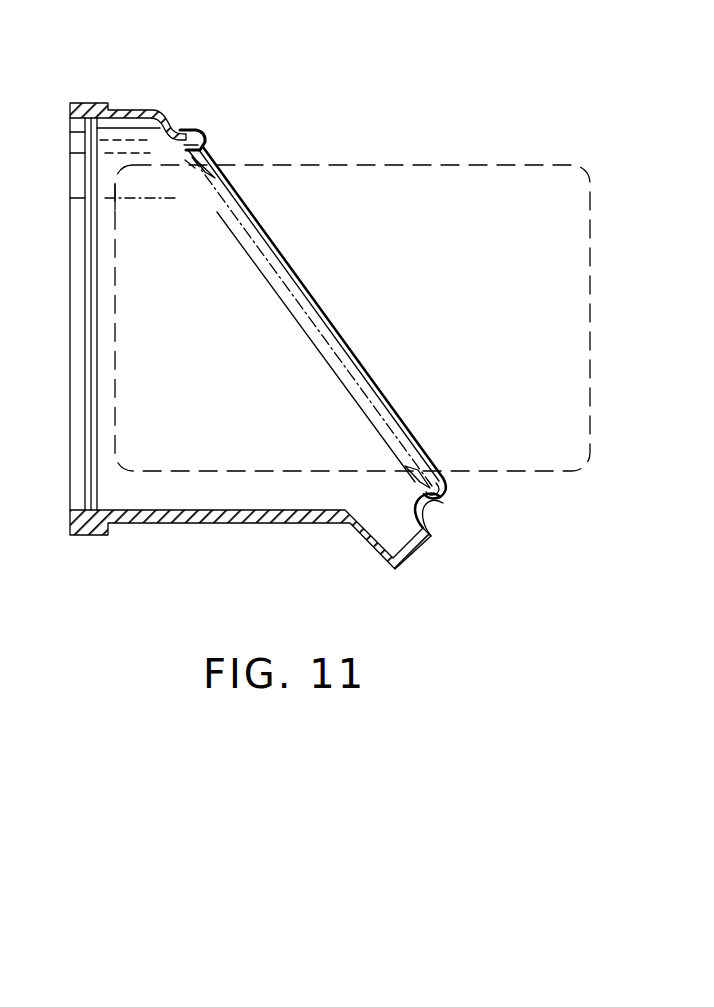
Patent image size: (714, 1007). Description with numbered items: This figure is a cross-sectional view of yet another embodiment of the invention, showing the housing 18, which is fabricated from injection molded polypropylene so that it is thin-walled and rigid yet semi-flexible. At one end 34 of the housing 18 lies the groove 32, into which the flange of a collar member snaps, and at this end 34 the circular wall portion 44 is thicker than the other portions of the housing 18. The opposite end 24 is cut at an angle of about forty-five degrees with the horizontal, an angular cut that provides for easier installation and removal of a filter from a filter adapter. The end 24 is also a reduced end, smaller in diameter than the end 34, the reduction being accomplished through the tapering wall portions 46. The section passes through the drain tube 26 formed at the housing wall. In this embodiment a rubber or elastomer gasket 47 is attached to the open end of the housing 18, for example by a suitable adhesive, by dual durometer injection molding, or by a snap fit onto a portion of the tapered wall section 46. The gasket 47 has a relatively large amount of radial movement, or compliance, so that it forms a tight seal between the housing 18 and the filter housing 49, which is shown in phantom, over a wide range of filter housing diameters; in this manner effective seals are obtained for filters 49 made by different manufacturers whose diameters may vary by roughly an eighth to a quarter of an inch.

The housing 18 is at (152, 86).
The reduced end 24 is at (358, 370).
The drain tube 26 is at (432, 525).
The groove 32 is at (92, 298).
The end containing the groove 34 is at (70, 272).
The circular wall portion 44 is at (96, 103).
The tapering wall portions 46 is at (180, 130).
The gasket 47 is at (186, 160).
The filter housing 49 is at (590, 408).